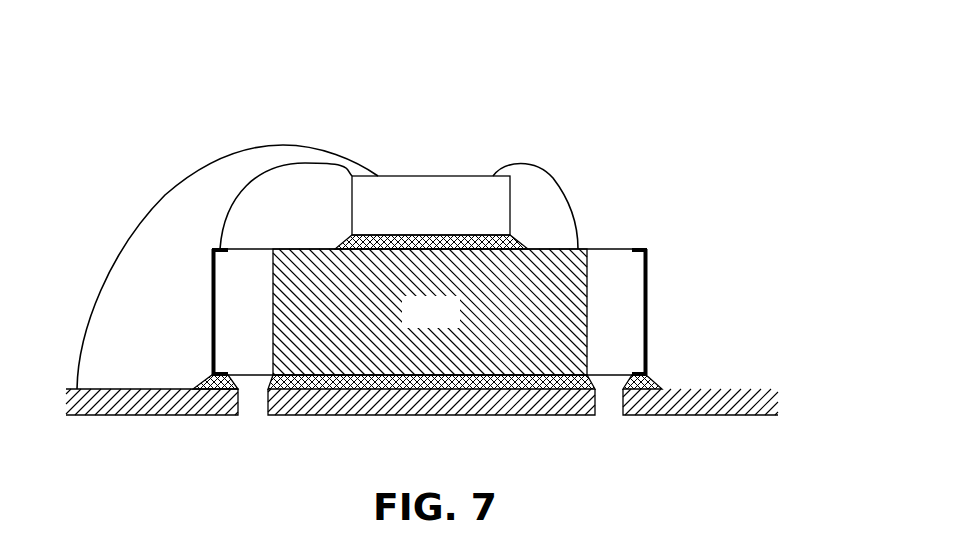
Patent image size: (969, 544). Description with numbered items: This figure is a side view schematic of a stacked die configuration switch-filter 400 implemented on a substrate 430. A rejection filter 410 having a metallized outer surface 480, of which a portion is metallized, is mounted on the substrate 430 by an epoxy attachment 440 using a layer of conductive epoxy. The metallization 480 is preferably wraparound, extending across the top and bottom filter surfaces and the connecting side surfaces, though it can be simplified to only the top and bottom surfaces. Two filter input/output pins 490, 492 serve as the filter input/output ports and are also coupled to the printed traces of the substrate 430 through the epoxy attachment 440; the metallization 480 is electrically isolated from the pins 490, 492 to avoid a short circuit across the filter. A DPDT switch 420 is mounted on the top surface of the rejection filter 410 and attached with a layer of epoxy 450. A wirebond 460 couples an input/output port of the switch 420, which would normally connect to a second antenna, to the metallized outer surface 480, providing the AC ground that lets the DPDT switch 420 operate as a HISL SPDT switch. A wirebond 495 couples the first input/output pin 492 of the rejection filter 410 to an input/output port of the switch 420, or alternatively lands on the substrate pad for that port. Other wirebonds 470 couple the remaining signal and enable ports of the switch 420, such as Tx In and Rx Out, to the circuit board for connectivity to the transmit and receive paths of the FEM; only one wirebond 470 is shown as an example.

The stacked die configuration switch-filter 400 is at (662, 101).
The rejection filter 410 is at (649, 330).
The DPDT switch 420 is at (454, 219).
The substrate 430 is at (722, 389).
The epoxy attachment 440 is at (200, 386).
The layer of epoxy 450 is at (345, 247).
The wirebond 460 is at (569, 193).
The wirebonds 470 is at (158, 198).
The metallized outer surface 480 is at (453, 325).
The filter input/output pin 490 is at (649, 270).
The first filter input/output pin 492 is at (211, 277).
The wirebond 495 is at (266, 178).